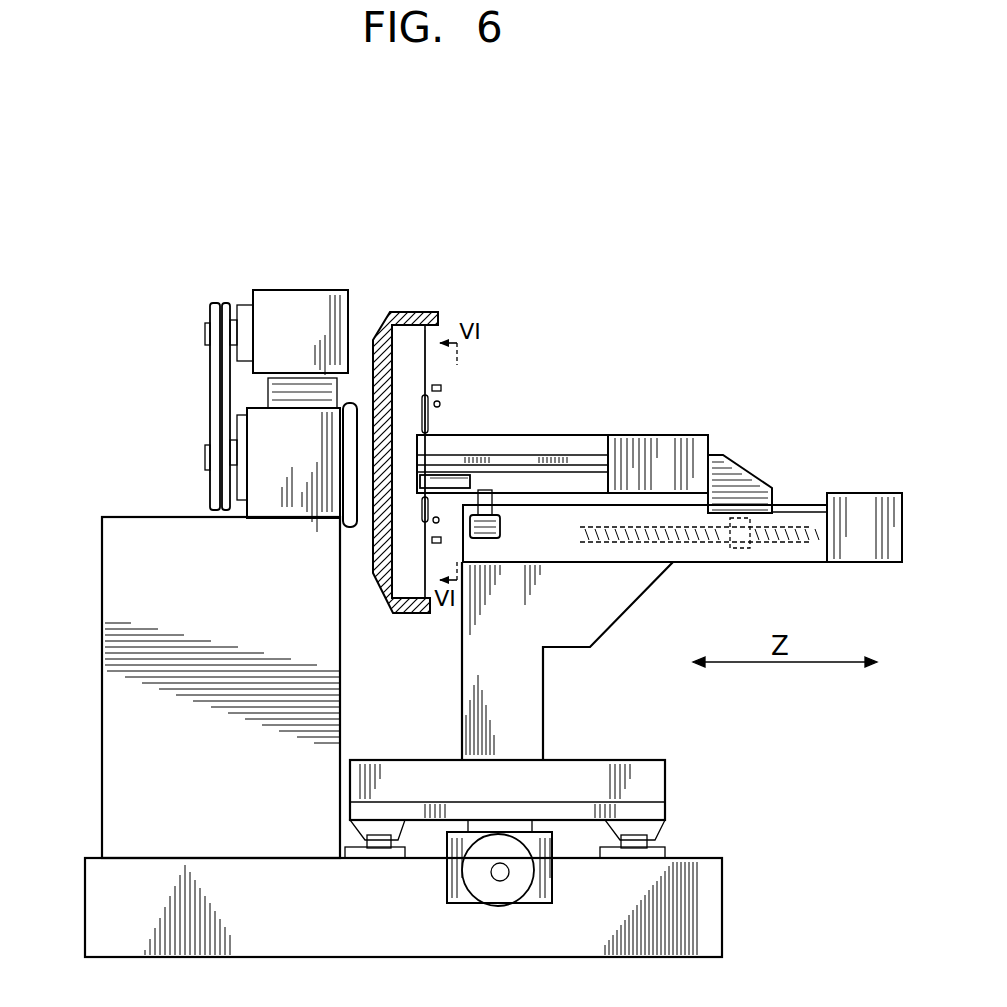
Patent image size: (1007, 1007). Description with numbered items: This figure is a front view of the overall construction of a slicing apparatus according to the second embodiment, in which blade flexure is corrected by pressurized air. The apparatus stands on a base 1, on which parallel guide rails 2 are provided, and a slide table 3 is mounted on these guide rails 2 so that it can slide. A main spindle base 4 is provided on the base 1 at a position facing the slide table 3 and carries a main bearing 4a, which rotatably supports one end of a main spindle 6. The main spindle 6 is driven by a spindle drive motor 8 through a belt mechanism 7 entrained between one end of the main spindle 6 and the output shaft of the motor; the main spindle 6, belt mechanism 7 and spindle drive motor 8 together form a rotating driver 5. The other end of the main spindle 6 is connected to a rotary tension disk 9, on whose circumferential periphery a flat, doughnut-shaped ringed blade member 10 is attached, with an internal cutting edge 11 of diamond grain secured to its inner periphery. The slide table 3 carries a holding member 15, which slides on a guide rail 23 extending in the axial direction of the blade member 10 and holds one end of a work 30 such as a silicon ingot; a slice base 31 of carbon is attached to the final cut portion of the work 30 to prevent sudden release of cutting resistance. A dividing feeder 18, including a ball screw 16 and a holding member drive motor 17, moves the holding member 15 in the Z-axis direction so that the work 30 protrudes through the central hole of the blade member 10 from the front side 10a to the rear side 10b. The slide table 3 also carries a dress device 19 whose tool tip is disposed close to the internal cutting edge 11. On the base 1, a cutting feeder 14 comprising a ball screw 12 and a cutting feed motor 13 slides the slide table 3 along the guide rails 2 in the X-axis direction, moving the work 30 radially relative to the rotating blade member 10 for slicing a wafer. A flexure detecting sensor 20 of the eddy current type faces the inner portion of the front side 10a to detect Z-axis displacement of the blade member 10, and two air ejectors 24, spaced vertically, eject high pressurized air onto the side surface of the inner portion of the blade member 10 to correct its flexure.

The base 1 is at (690, 918).
The guide rails 2 is at (375, 852).
The slide table 3 is at (510, 690).
The main spindle base 4 is at (110, 810).
The main bearing 4a is at (278, 520).
The rotating driver 5 is at (229, 345).
The main spindle 6 is at (355, 400).
The belt mechanism 7 is at (205, 380).
The spindle drive motor 8 is at (293, 290).
The rotary tension disk 9 is at (415, 312).
The blade member 10 is at (451, 410).
The front side 10a is at (432, 380).
The rear side 10b is at (392, 325).
The internal cutting edge 11 is at (429, 420).
The ball screw 12 is at (505, 880).
The cutting feed motor 13 is at (487, 893).
The cutting feeder 14 is at (559, 883).
The holding member 15 is at (740, 470).
The ball screw 16 is at (693, 548).
The holding member drive motor 17 is at (860, 493).
The dividing feeder 18 is at (678, 542).
The dress device 19 is at (496, 478).
The flexure detecting sensor 20 is at (441, 404).
The guide rail 23 is at (800, 505).
The air ejector 24 is at (441, 388).
The work 30 is at (577, 435).
The slice base 31 is at (590, 455).